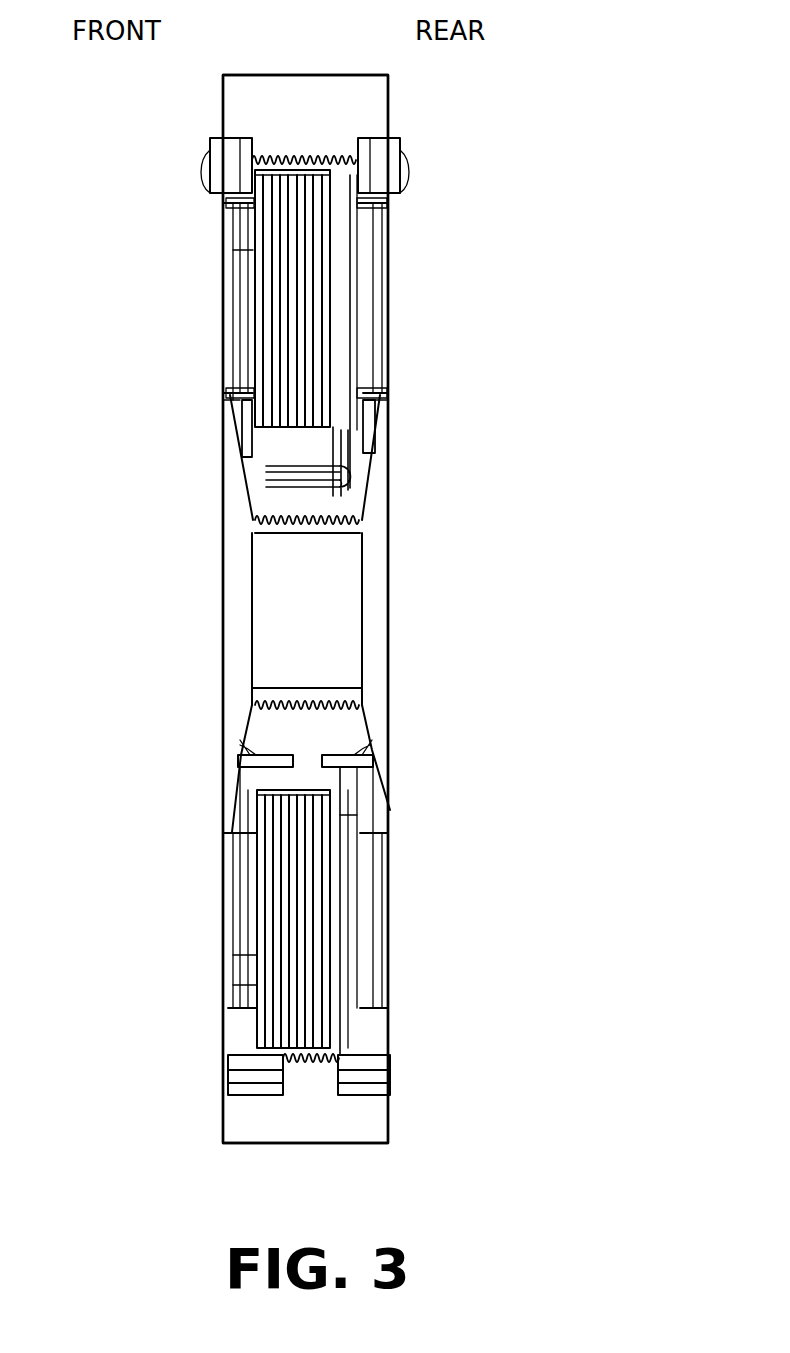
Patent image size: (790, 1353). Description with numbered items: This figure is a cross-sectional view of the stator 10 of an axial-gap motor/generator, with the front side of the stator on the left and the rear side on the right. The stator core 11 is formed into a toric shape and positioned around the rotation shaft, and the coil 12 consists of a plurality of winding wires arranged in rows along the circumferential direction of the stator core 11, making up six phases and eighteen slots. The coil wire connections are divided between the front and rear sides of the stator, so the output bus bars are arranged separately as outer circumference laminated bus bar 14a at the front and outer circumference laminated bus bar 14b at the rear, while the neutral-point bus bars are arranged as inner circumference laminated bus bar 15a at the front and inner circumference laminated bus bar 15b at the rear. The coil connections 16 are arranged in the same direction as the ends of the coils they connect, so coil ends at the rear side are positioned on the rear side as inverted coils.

The stator 10 is at (549, 167).
The stator core 11 is at (391, 555).
The coil 12 is at (290, 292).
The outer circumference laminated bus bar 14a is at (211, 165).
The outer circumference laminated bus bar 14b is at (400, 145).
The inner circumference laminated bus bar 15a is at (236, 420).
The inner circumference laminated bus bar 15b is at (390, 417).
The coil connections 16 is at (238, 203).